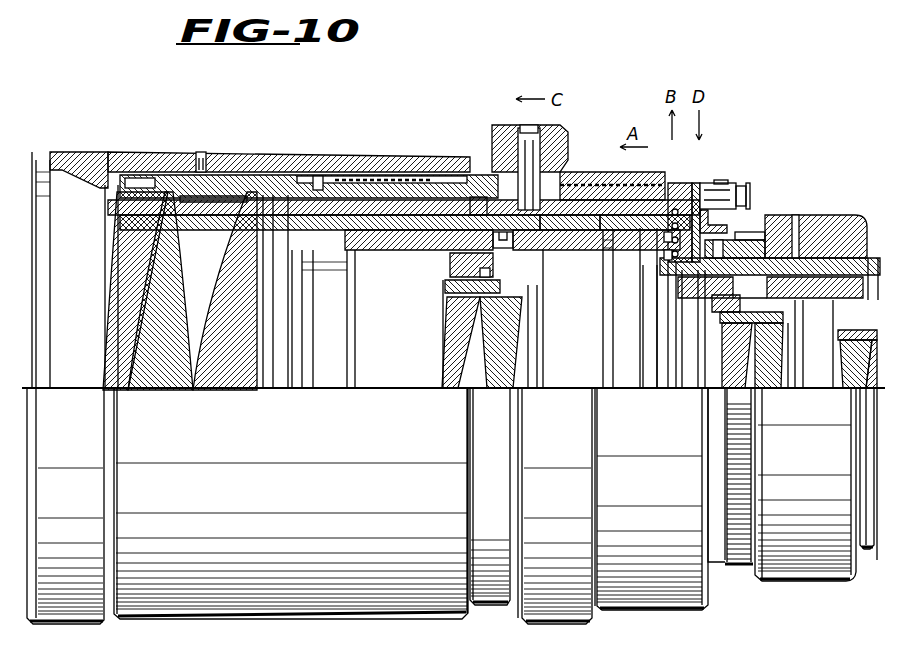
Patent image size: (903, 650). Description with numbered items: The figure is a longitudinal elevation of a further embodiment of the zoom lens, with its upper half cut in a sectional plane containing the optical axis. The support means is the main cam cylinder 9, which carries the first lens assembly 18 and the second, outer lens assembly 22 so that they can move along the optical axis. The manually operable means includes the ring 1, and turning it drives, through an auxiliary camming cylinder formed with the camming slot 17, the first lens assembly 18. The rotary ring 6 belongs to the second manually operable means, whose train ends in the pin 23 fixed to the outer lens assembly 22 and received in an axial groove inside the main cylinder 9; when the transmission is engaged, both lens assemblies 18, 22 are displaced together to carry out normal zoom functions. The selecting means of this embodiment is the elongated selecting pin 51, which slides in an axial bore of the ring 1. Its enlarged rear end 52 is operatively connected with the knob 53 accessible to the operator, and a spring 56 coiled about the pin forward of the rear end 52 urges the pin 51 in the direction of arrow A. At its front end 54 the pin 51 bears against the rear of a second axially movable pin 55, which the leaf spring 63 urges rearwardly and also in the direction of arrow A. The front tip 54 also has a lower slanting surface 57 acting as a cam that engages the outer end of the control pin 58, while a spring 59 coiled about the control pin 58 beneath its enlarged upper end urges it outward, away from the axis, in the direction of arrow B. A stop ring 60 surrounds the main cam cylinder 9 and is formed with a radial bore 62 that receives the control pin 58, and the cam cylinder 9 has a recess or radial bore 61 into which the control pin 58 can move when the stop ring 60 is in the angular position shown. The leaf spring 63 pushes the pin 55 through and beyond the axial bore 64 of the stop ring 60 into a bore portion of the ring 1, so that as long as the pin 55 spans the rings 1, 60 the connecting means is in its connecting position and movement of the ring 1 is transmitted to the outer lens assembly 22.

The ring 1 is at (553, 625).
The rotary ring 6 is at (806, 590).
The main cam cylinder 9 is at (382, 208).
The camming slot 17 is at (445, 238).
The first lens assembly 18 is at (445, 356).
The second, outer lens assembly 22 is at (722, 383).
The pin 23 is at (721, 355).
The selecting pin 51 is at (614, 188).
The rear end 52 is at (540, 160).
The knob 53 is at (492, 136).
The front end 54 is at (692, 185).
The second axially movable pin 55 is at (737, 188).
The spring 56 is at (572, 205).
The lower slanting surface 57 is at (673, 183).
The control pin 58 is at (665, 262).
The spring 59 is at (665, 242).
The stop ring 60 is at (720, 235).
The recess or radial bore 61 is at (716, 308).
The radial bore 62 is at (672, 283).
The leaf spring 63 is at (750, 195).
The axial bore 64 is at (721, 180).